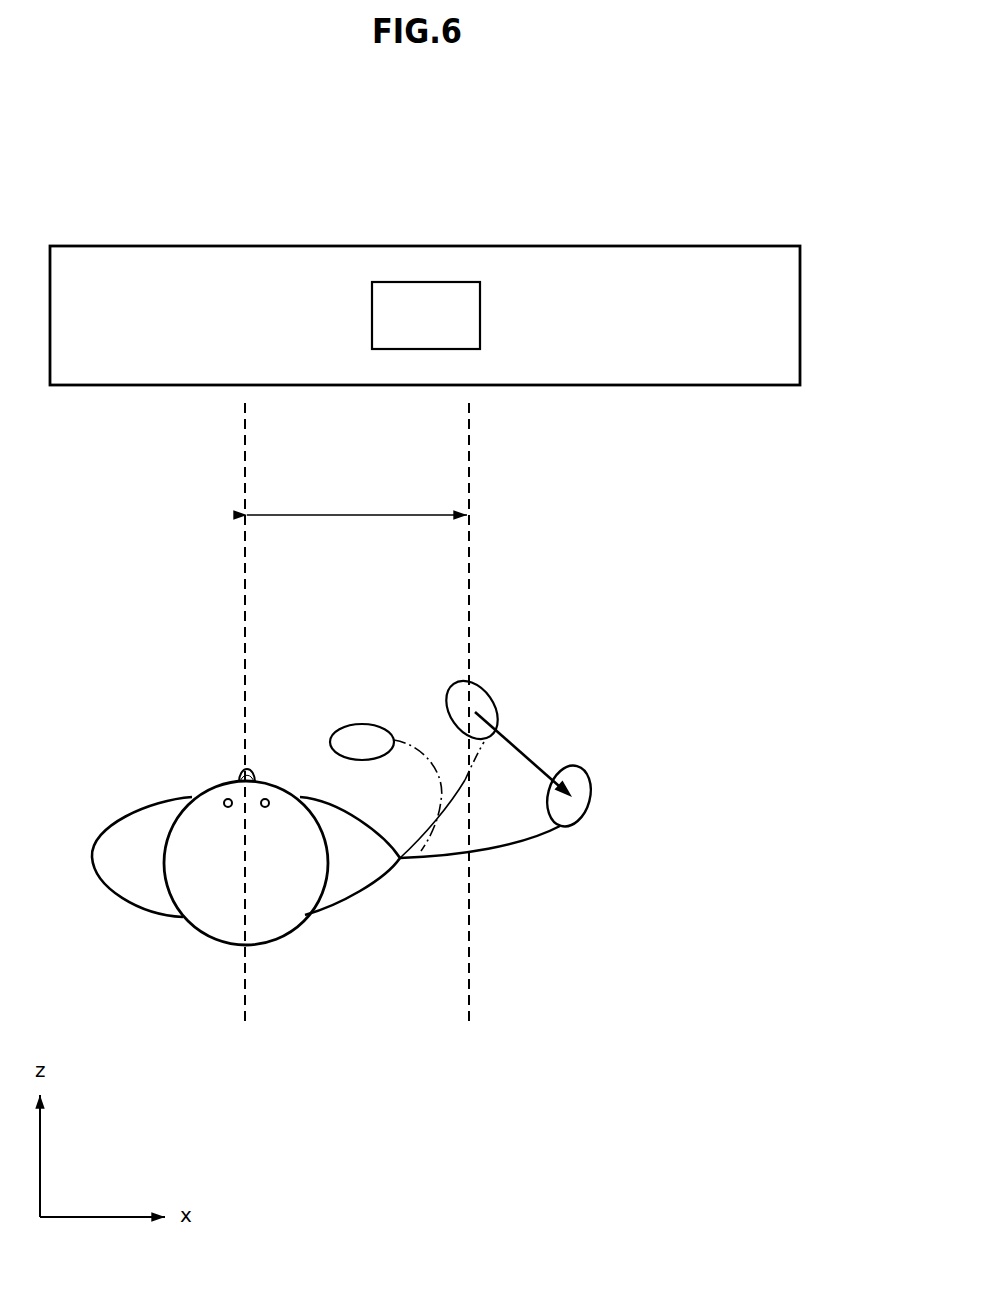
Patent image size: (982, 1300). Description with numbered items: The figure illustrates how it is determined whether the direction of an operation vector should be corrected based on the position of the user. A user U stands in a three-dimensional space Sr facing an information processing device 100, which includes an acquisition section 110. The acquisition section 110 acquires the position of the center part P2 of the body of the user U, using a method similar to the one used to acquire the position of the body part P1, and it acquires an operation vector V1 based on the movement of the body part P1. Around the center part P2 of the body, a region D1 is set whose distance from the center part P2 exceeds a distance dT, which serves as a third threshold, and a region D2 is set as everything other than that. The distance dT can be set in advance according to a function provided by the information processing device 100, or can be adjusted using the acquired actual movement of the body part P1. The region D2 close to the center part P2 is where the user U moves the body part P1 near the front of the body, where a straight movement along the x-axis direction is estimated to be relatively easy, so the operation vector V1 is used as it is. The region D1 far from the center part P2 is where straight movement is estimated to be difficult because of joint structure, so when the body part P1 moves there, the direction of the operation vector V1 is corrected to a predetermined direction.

The information processing device 100 is at (663, 211).
The acquisition section 110 is at (427, 282).
The body part P1 is at (360, 724).
The center part of the body P2 is at (236, 761).
The operation vector V1 is at (520, 757).
The user U is at (190, 938).
The region far from the center part of the body D1 is at (592, 995).
The region close to the center part of the body D2 is at (365, 999).
The distance (third threshold) dT is at (357, 715).
The three-dimensional space Sr is at (414, 1110).